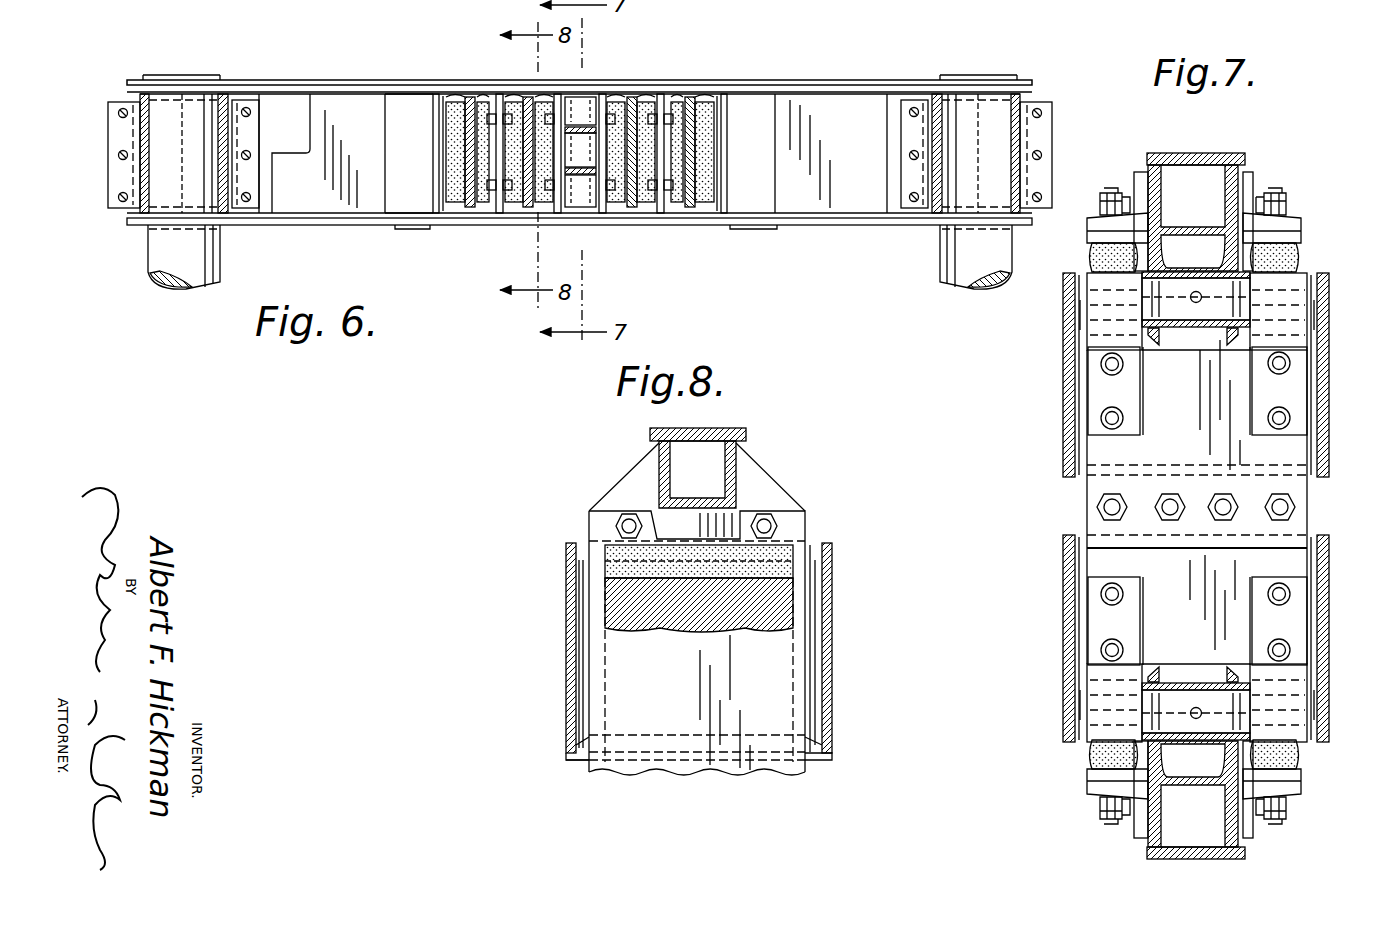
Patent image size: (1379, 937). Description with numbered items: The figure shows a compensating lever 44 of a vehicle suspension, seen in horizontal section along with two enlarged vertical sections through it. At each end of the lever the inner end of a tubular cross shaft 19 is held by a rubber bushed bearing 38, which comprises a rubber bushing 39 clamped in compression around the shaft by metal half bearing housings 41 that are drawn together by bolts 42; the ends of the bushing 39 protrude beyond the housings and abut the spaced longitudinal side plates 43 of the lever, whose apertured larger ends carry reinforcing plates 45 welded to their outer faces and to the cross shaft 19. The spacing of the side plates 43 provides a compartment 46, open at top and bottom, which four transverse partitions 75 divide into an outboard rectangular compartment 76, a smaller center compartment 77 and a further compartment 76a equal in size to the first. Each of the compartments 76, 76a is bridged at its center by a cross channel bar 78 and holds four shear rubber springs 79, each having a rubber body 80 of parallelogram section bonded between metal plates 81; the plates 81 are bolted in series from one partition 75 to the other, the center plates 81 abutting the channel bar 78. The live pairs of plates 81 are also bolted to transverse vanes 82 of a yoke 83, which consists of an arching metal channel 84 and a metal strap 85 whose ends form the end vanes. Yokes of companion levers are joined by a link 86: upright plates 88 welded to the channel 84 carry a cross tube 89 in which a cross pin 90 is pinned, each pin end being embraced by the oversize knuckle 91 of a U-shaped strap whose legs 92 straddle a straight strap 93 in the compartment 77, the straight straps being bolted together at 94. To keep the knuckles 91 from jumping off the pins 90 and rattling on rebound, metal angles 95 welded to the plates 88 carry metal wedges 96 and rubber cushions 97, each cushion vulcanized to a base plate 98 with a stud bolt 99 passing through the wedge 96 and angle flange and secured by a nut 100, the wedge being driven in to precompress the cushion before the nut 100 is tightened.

In FIG. 6, the tubular cross shaft 19 is at (152, 275).
In FIG. 6, the bearing 38 is at (584, 141).
In FIG. 6, the rubber bushing 39 is at (218, 135).
In FIG. 6, the half bearing housing 41 is at (108, 125).
In FIG. 6, the bolts 42 is at (121, 108).
In FIG. 6, the side plates 43 is at (378, 92).
In FIG. 8, the side plates 43 is at (574, 638).
In FIG. 7, the side plates 43 is at (1063, 350).
In FIG. 6, the compensating lever 44 is at (579, 158).
In FIG. 8, the compensating lever 44 is at (704, 651).
In FIG. 7, the compensating lever 44 is at (1174, 507).
In FIG. 6, the reinforcing plates 45 is at (300, 82).
In FIG. 6, the compartment 46 is at (408, 208).
In FIG. 7, the compartment 46 is at (1087, 432).
In FIG. 6, the transverse partitions 75 is at (436, 100).
In FIG. 8, the transverse partitions 75 is at (585, 694).
In FIG. 7, the transverse partitions 75 is at (1079, 405).
In FIG. 6, the rectangular compartment 76 is at (582, 188).
In FIG. 8, the rectangular compartment 76 is at (853, 648).
In FIG. 6, the rectangular compartment 76a is at (480, 213).
In FIG. 8, the rectangular compartment 76a is at (815, 588).
In FIG. 7, the smaller rectangular compartment 77 is at (1312, 537).
In FIG. 6, the cross channel bars 78 is at (472, 97).
In FIG. 8, the cross channel bars 78 is at (585, 760).
In FIG. 6, the shear rubber springs 79 is at (700, 75).
In FIG. 6, the rubber body 80 is at (515, 138).
In FIG. 8, the rubber body 80 is at (627, 596).
In FIG. 6, the metal plates 81 is at (462, 95).
In FIG. 8, the metal plates 81 is at (598, 517).
In FIG. 8, the transverse fins or cross vanes 82 is at (644, 464).
In FIG. 8, the yoke 83 is at (710, 457).
In FIG. 7, the yoke 83 is at (1204, 476).
In FIG. 8, the arching metal channel 84 is at (731, 467).
In FIG. 7, the arching metal channel 84 is at (1228, 185).
In FIG. 8, the metal strap 85 is at (668, 428).
In FIG. 7, the metal strap 85 is at (1193, 153).
In FIG. 7, the link 86 is at (1175, 508).
In FIG. 7, the upright plates 88 is at (1160, 170).
In FIG. 7, the cross tube 89 is at (1172, 340).
In FIG. 7, the cross pin 90 is at (1213, 288).
In FIG. 7, the knuckle 91 is at (1095, 298).
In FIG. 7, the legs 92 is at (1130, 401).
In FIG. 7, the straight strap 93 is at (1283, 450).
In FIG. 7, the bolts 94 is at (1278, 494).
In FIG. 7, the metal angles 95 is at (1188, 505).
In FIG. 7, the metal wedges 96 is at (1188, 506).
In FIG. 7, the rubber cushions 97 is at (1092, 258).
In FIG. 7, the base plate 98 is at (1342, 792).
In FIG. 7, the stud bolt 99 is at (1108, 193).
In FIG. 7, the nut 100 is at (1102, 208).